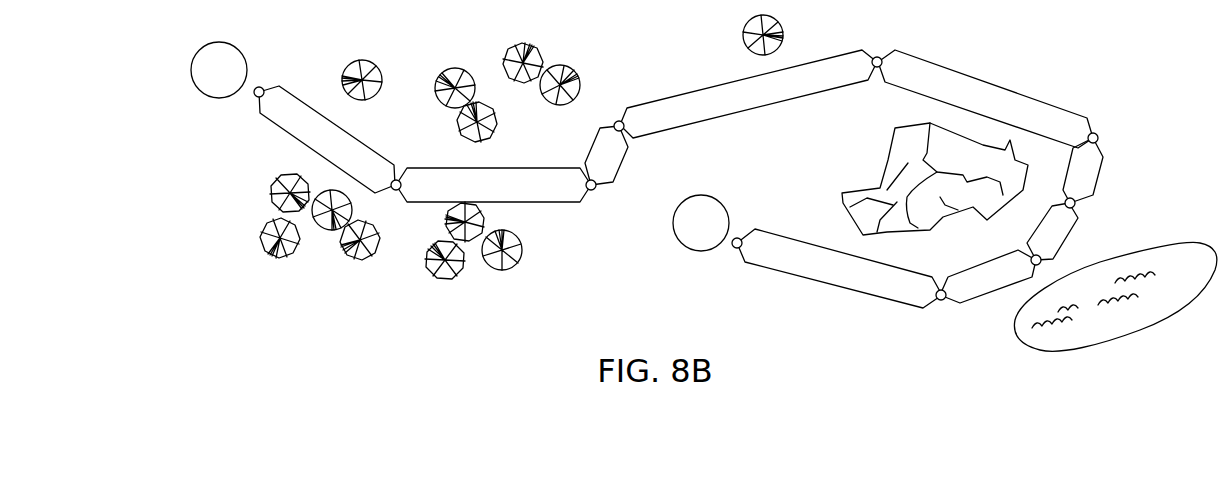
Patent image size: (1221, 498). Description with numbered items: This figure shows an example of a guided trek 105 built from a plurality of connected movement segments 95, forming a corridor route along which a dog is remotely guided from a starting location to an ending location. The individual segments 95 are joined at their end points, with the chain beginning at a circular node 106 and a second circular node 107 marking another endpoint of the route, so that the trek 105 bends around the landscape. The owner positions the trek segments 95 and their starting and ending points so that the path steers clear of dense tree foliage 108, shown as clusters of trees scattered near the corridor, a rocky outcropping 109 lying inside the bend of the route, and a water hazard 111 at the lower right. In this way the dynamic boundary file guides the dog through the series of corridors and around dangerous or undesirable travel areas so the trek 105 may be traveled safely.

The segment 95 is at (283, 130).
The guided trek 105 is at (692, 172).
The node C 106 is at (203, 90).
The node D 107 is at (689, 250).
The dense tree foliage 108 is at (334, 54).
The rocky outcroppings 109 is at (841, 162).
The water hazards 111 is at (980, 330).